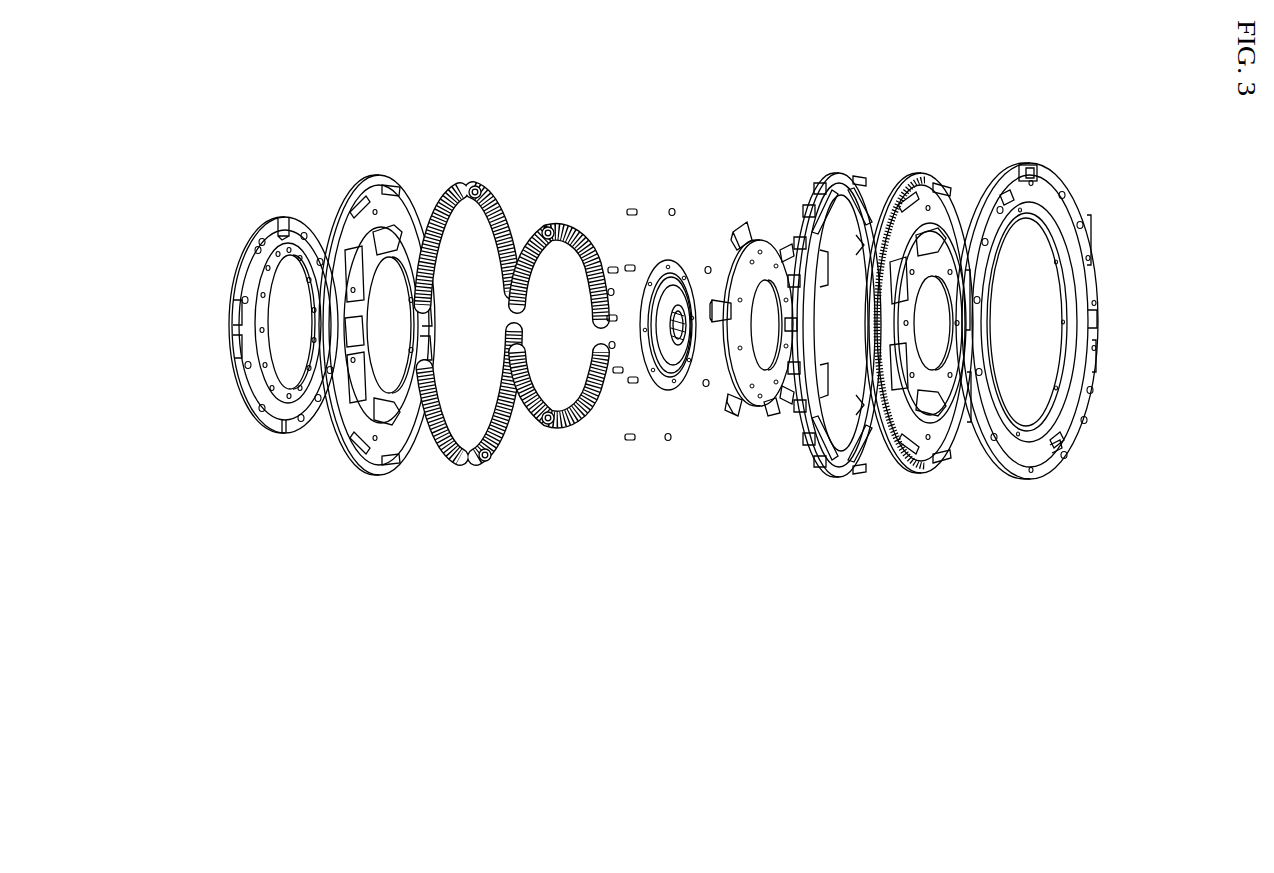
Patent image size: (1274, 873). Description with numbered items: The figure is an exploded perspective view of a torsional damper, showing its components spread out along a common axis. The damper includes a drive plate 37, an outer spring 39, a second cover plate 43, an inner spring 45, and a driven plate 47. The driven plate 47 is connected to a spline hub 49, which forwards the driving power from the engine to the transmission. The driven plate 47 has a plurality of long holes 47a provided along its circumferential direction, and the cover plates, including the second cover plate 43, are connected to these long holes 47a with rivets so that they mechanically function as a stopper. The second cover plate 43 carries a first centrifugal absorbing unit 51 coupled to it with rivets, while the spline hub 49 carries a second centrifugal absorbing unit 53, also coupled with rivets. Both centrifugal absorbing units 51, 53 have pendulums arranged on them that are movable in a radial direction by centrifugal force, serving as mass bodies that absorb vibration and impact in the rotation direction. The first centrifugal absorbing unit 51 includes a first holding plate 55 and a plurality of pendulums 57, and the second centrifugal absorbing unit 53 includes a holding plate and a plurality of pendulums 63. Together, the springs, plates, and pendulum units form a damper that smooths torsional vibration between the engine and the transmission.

The drive plate 37 is at (847, 173).
The outer spring 39 is at (472, 184).
The second cover plate 43 is at (920, 173).
The inner spring 45 is at (540, 230).
The driven plate 47 is at (752, 306).
The long holes 47a is at (740, 406).
The spline hub 49 is at (666, 258).
The first centrifugal absorbing unit 51 is at (1038, 275).
The second centrifugal absorbing unit 53 is at (263, 202).
The first holding plate 55 is at (1032, 187).
The pendulums 57 is at (980, 195).
The pendulums 63 is at (290, 222).